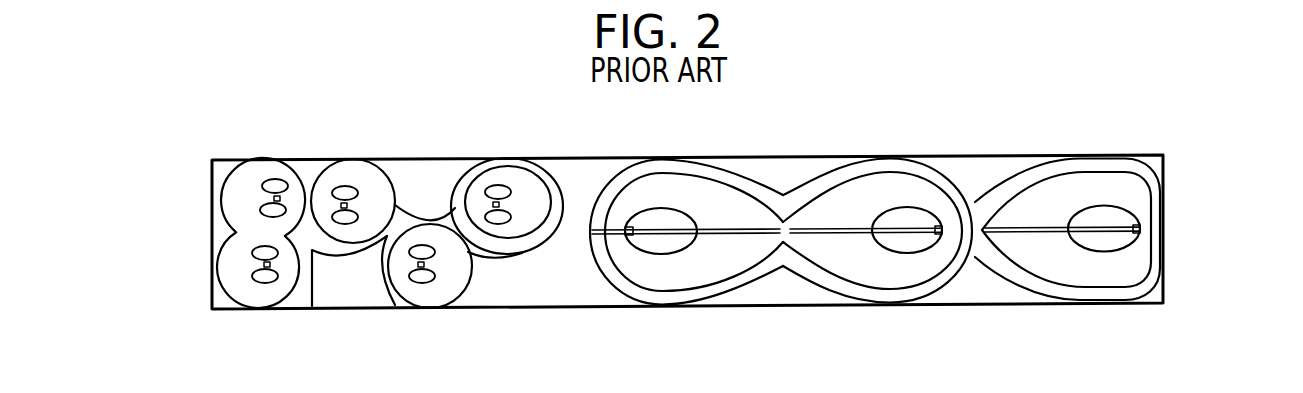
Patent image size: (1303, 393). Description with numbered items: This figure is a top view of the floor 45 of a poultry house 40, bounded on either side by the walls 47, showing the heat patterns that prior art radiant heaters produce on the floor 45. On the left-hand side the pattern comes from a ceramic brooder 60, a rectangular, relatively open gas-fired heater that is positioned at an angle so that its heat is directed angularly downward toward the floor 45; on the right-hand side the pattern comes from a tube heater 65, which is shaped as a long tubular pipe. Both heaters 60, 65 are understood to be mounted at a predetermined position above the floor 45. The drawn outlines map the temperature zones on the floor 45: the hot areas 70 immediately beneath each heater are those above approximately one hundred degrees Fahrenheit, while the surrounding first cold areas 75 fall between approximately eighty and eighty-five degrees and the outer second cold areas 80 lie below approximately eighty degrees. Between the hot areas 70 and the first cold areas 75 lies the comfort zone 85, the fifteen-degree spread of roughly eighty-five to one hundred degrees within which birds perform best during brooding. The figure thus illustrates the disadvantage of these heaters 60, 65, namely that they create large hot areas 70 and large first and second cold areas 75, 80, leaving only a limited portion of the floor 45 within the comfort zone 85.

The poultry house 40 is at (1205, 180).
The floor 45 is at (583, 188).
The walls 47 is at (795, 157).
The ceramic brooder 60 is at (272, 197).
The tube heater 65 is at (683, 250).
The hot areas 70 is at (279, 183).
The first cold areas 75 is at (225, 178).
The second cold areas 80 is at (213, 160).
The comfort zone 85 is at (352, 178).